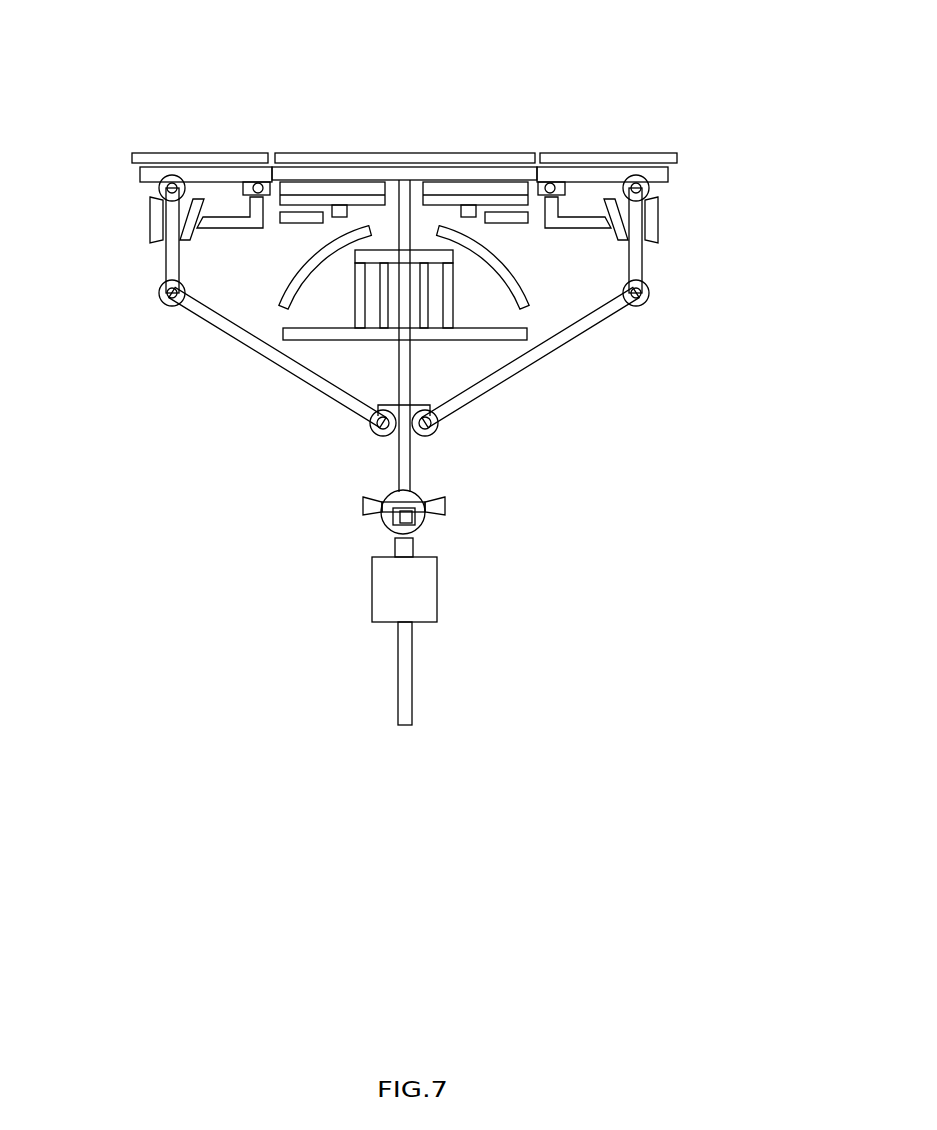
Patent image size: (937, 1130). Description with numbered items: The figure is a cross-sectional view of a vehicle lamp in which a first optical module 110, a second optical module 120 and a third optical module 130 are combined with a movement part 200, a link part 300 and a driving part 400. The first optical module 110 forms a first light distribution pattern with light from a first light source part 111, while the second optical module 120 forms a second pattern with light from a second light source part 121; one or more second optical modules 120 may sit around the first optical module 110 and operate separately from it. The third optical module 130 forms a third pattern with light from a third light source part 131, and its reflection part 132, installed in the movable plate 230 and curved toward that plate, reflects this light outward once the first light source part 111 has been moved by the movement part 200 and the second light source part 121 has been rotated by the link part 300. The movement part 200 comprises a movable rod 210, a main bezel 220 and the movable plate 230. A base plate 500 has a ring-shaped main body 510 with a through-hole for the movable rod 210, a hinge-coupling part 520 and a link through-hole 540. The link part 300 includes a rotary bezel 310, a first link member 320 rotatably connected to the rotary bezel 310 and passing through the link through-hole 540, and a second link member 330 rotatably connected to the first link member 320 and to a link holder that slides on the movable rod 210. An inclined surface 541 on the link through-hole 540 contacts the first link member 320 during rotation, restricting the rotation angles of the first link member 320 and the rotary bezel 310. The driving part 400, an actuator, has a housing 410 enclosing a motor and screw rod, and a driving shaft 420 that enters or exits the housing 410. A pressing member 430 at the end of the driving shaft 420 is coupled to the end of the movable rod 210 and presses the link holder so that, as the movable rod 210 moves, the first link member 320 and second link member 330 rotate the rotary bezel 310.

The first optical module 110 is at (404, 92).
The first light source part 111 is at (427, 153).
The second optical module 120 is at (404, 93).
The second light source part 121 is at (180, 153).
The third optical module 130 is at (266, 358).
The third light source part 131 is at (163, 298).
The reflection part 132 is at (313, 197).
The movement part 200 is at (396, 300).
The movable rod 210 is at (403, 385).
The main bezel 220 is at (332, 153).
The movable plate 230 is at (328, 340).
The link part 300 is at (416, 244).
The rotary bezel 310 is at (140, 174).
The first link member 320 is at (166, 257).
The second link member 330 is at (267, 355).
The driving part 400 is at (491, 607).
The housing 410 is at (438, 603).
The driving shaft 420 is at (415, 537).
The pressing member 430 is at (425, 520).
The base plate 500 is at (650, 285).
The main body 510 is at (642, 240).
The hinge-coupling part 520 is at (550, 203).
The link through-hole 540 is at (686, 228).
The inclined surface 541 is at (658, 230).